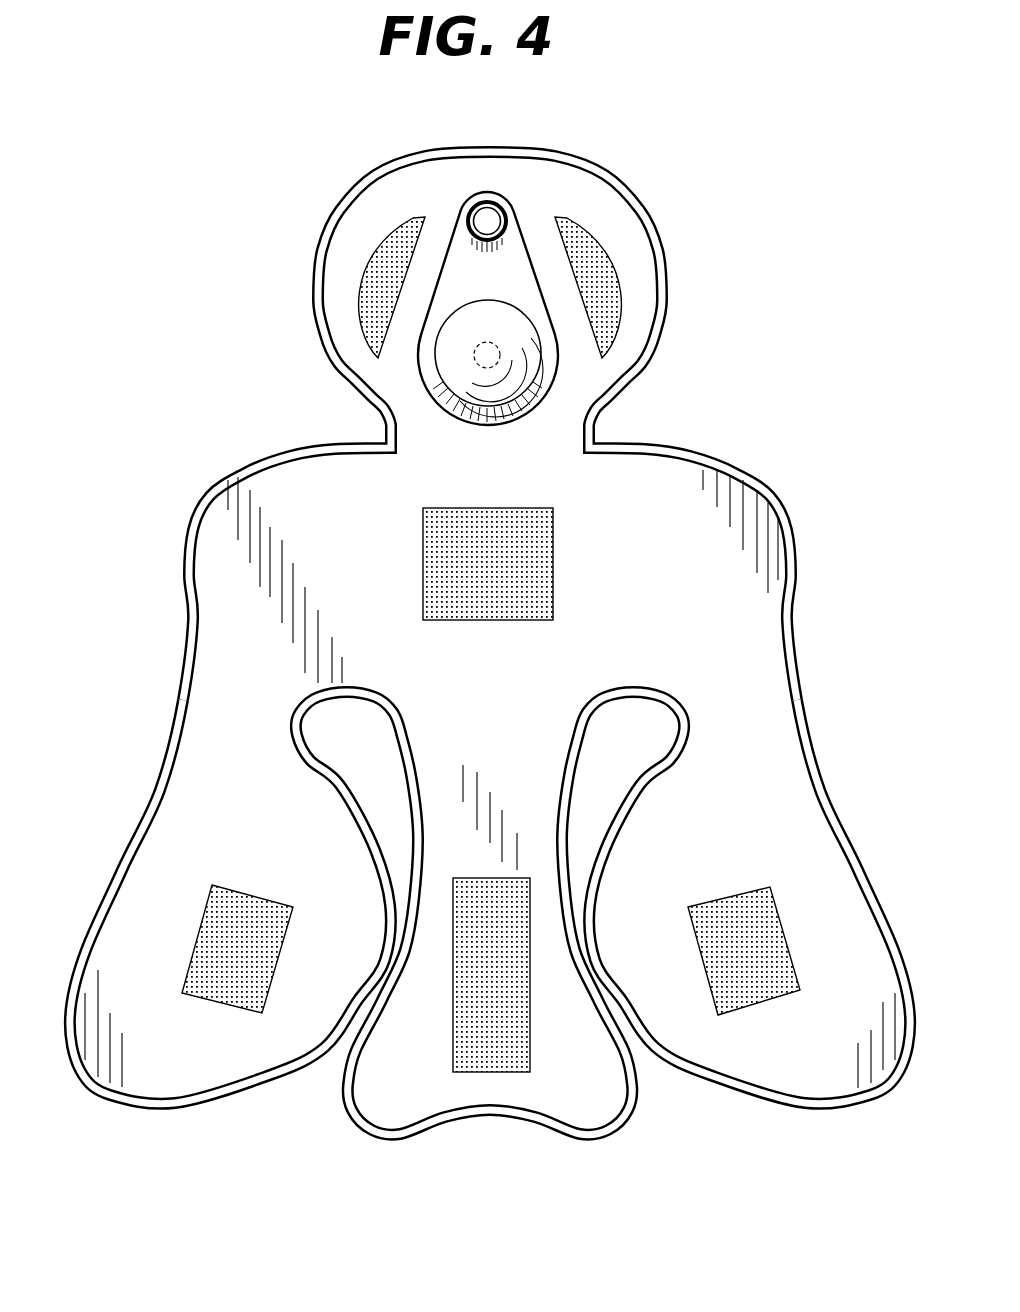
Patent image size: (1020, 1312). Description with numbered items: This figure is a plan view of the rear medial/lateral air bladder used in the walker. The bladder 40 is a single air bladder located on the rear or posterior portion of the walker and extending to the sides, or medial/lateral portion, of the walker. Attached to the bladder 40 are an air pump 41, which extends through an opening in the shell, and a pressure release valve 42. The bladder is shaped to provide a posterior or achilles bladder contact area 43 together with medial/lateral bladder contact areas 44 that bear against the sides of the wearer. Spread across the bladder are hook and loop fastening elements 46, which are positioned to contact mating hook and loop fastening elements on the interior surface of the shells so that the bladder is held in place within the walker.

The bladder 40 is at (481, 672).
The air pump 41 is at (517, 340).
The pressure release valve 42 is at (465, 212).
The posterior or achilles bladder contact area 43 is at (410, 1097).
The medial/lateral bladder contact areas 44 is at (220, 843).
The hook and loop fastening elements 46 is at (388, 257).